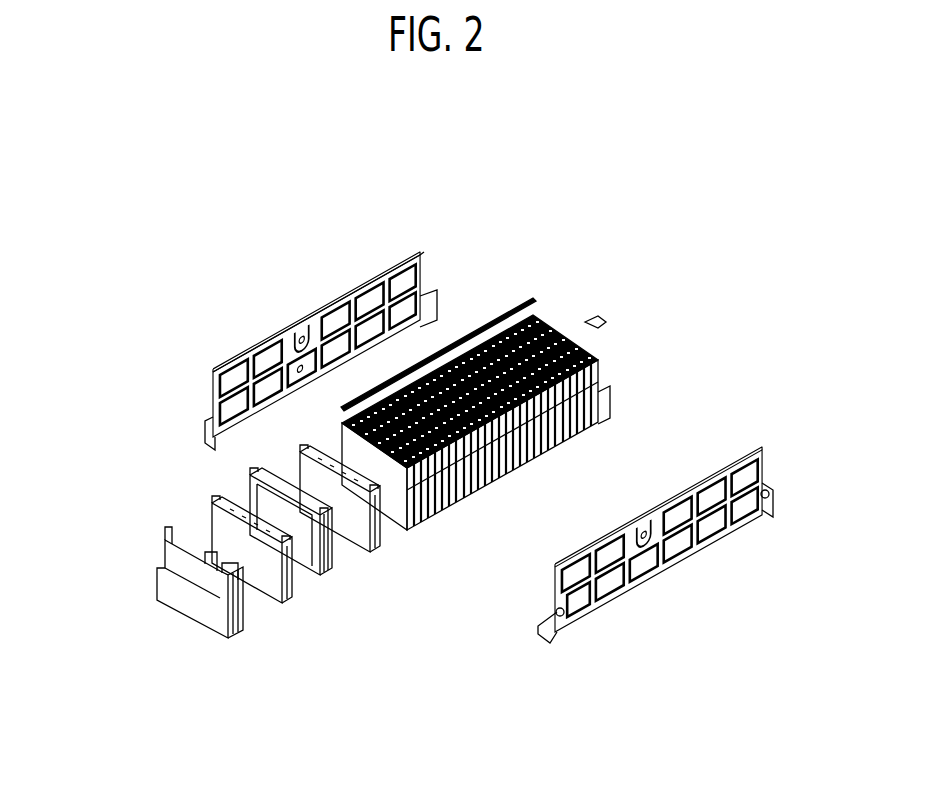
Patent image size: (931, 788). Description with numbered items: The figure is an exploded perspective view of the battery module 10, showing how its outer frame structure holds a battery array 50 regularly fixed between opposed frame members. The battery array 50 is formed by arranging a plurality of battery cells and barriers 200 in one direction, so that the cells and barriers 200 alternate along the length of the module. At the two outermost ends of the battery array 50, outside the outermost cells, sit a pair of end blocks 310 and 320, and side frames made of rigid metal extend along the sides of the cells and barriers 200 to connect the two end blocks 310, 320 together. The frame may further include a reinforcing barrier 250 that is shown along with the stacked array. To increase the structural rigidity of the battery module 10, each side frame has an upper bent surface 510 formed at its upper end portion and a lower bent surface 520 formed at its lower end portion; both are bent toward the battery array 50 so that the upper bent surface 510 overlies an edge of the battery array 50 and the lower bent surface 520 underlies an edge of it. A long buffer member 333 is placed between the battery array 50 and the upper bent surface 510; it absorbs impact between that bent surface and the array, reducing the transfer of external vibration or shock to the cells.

The battery module 10 is at (453, 183).
The battery array 50 is at (432, 667).
The barrier 200 is at (375, 548).
The reinforcing barrier 250 is at (487, 492).
The end block 310 is at (183, 603).
The end block 320 is at (597, 350).
The buffer member 333 is at (458, 335).
The upper bent surface 510 is at (265, 340).
The lower bent surface 520 is at (203, 437).